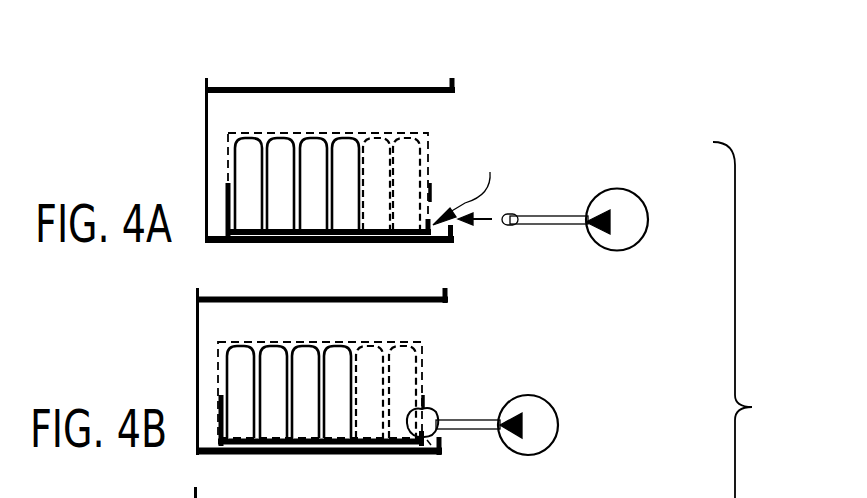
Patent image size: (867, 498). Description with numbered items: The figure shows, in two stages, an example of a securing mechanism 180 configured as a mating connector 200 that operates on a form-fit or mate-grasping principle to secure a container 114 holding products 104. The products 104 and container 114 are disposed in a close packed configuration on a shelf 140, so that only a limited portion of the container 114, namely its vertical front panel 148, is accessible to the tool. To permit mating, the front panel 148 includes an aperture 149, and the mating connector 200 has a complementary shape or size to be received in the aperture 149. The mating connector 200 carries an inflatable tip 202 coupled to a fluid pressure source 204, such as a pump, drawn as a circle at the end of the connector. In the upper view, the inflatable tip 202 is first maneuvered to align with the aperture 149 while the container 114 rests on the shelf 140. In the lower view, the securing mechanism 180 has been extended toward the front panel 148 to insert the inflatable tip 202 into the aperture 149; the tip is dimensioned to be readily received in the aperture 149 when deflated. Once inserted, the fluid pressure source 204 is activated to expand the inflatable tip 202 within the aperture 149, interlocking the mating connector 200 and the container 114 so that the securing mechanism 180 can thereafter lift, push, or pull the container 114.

In FIG. 4A, the products 104 is at (347, 143).
In FIG. 4B, the products 104 is at (333, 350).
In FIG. 4A, the container 114 is at (260, 242).
In FIG. 4B, the container 114 is at (327, 446).
In FIG. 4A, the shelf 140 is at (449, 252).
In FIG. 4B, the shelf 140 is at (420, 452).
In FIG. 4A, the front panel 148 is at (430, 182).
In FIG. 4B, the front panel 148 is at (428, 373).
In FIG. 4A, the aperture 149 is at (469, 183).
In FIG. 4B, the aperture 149 is at (427, 442).
In FIG. 4B, the securing mechanism 180 is at (752, 320).
In FIG. 4A, the mating connector 200 is at (563, 224).
In FIG. 4B, the mating connector 200 is at (488, 430).
In FIG. 4A, the inflatable tip 202 is at (510, 213).
In FIG. 4B, the inflatable tip 202 is at (432, 416).
In FIG. 4A, the fluid pressure source 204 is at (637, 191).
In FIG. 4B, the fluid pressure source 204 is at (554, 411).